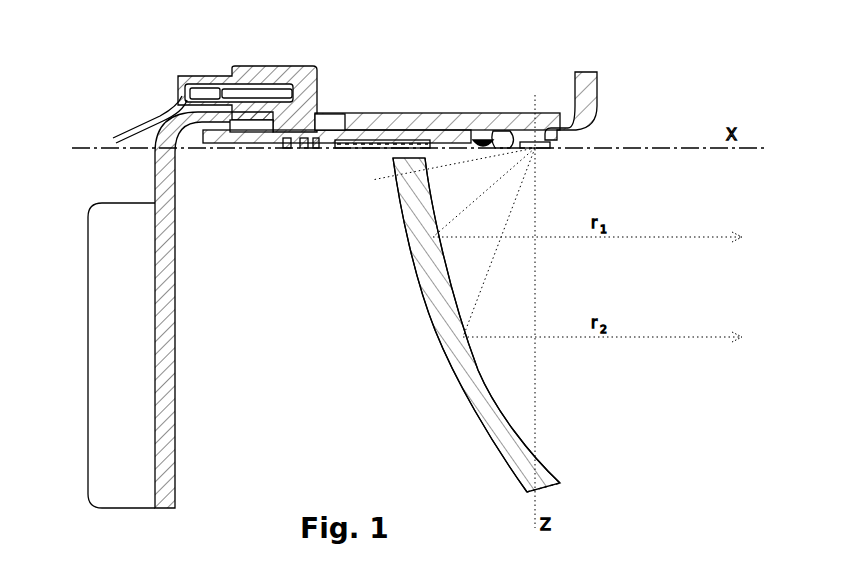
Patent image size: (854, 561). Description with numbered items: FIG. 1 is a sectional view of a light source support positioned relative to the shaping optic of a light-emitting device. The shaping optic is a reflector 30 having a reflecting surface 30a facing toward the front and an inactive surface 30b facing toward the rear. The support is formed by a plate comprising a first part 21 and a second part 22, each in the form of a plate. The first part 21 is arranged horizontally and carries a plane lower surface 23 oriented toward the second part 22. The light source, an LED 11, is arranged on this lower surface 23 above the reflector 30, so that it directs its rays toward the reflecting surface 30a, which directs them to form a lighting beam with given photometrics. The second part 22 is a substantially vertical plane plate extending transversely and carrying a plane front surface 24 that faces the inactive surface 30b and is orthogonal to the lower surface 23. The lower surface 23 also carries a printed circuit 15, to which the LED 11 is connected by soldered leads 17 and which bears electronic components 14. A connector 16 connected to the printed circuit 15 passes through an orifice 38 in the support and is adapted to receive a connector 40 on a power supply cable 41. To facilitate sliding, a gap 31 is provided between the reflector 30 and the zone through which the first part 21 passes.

The light source 11 is at (514, 148).
The electronic components 14 is at (353, 132).
The printed circuit 15 is at (467, 132).
The connector 16 is at (276, 74).
The soldered leads 17 is at (518, 128).
The first part 21 is at (493, 113).
The second part 22 is at (175, 424).
The lower surface 23 is at (433, 140).
The front surface 24 is at (178, 288).
The shaping optic 30 is at (452, 355).
The reflecting surface 30a is at (512, 421).
The inactive surface 30b is at (488, 446).
The gap 31 is at (400, 152).
The orifice 38 is at (330, 120).
The connector 40 is at (193, 76).
The power supply cable 41 is at (132, 124).